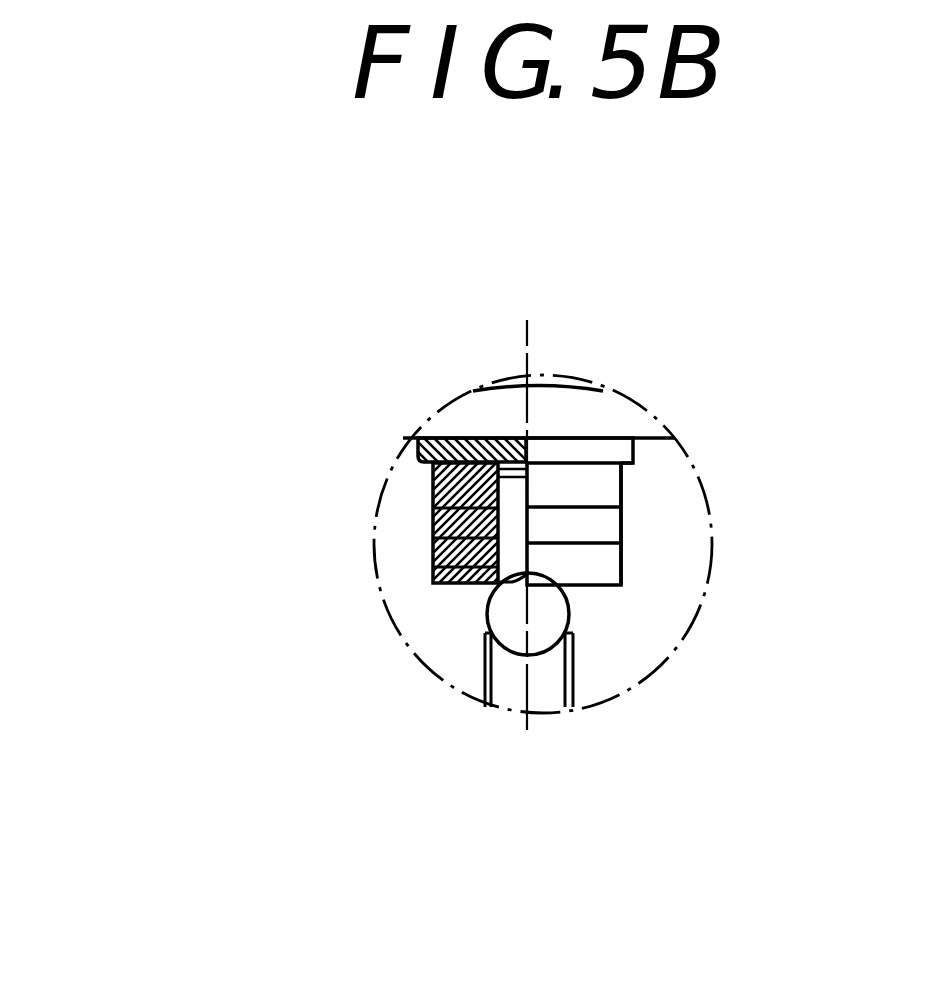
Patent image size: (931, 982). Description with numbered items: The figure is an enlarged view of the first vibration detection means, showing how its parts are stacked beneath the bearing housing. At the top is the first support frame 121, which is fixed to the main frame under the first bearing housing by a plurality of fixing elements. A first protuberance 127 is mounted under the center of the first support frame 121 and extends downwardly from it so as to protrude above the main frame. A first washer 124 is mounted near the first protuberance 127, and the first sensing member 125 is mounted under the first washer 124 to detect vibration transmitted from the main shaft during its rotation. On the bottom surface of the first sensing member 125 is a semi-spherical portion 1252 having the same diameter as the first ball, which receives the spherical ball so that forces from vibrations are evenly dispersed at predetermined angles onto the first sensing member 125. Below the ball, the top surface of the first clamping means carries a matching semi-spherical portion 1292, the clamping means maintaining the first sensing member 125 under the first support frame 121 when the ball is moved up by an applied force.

The first support frame 121 is at (520, 386).
The first protuberance 127 is at (532, 463).
The semi-spherical portion 1252 is at (433, 568).
The first sensing member 125 is at (623, 588).
The first washer 124 is at (634, 465).
The semi-spherical portion 1292 is at (528, 653).